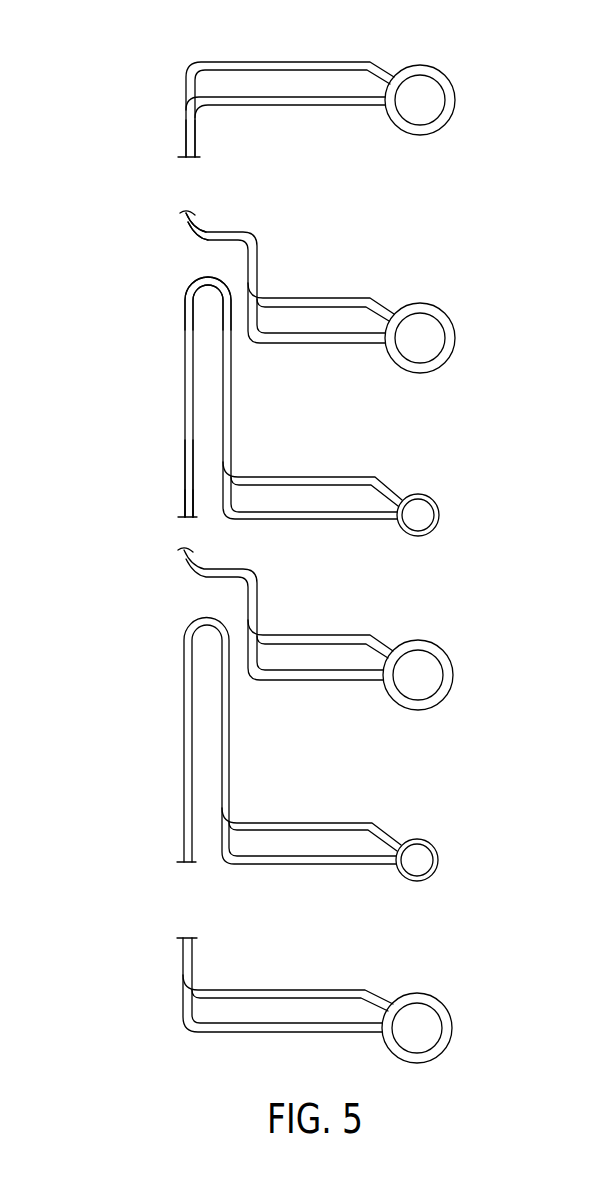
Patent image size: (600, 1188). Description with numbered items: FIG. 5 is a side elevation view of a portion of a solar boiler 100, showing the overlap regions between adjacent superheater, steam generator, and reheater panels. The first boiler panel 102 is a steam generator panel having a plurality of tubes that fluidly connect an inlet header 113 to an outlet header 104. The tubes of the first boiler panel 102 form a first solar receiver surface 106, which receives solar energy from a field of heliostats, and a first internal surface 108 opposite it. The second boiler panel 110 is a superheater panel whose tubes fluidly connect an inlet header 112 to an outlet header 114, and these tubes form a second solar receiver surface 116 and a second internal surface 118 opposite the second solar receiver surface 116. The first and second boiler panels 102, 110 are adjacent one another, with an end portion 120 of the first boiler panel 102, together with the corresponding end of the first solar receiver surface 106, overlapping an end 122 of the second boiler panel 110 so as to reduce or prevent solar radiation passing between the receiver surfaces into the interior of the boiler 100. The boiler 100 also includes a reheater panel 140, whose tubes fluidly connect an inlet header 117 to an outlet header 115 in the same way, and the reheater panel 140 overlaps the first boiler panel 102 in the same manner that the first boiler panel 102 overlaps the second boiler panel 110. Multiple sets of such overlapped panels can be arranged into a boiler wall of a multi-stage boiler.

The solar boiler 100 is at (76, 85).
The first boiler panel 102 is at (185, 487).
The outlet header 104 is at (438, 509).
The first solar receiver surface 106 is at (185, 387).
The first internal surface 108 is at (193, 500).
The second boiler panel 110 is at (186, 222).
The inlet header 112 is at (455, 330).
The inlet header 113 is at (453, 665).
The outlet header 114 is at (455, 112).
The outlet header 115 is at (438, 852).
The second solar receiver surface 116 is at (186, 137).
The inlet header 117 is at (452, 1020).
The second internal surface 118 is at (195, 138).
The end portion 120 is at (185, 310).
The end 122 is at (258, 265).
The reheater panel 140 is at (184, 760).